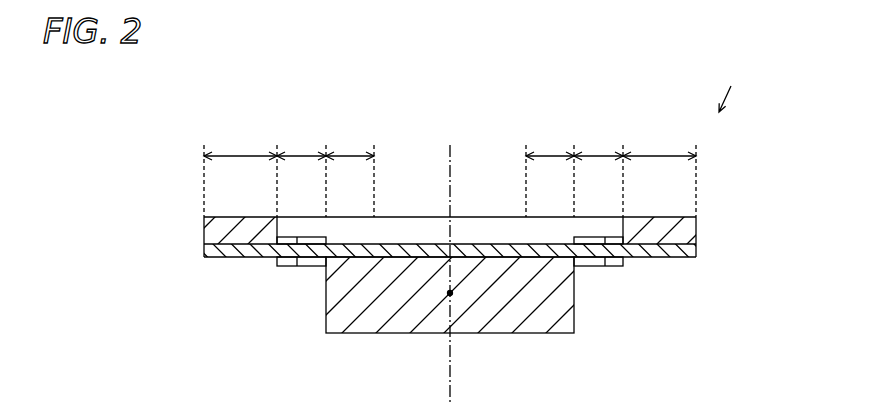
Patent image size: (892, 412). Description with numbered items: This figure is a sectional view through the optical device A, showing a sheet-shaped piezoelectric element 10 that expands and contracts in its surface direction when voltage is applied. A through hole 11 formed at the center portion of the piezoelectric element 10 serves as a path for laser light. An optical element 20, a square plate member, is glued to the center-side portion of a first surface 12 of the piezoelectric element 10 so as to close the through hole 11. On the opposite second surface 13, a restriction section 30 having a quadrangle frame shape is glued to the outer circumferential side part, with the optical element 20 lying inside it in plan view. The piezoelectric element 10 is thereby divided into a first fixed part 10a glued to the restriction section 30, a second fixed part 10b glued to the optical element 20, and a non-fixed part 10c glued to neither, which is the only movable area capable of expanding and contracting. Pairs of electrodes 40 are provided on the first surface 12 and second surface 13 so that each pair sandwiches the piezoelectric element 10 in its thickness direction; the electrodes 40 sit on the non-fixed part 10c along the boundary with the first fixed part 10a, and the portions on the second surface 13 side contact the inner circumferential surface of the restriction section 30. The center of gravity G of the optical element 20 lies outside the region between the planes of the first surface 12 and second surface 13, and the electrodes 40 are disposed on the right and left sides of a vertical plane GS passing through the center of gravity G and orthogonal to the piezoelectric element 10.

The piezoelectric element 10 is at (464, 264).
The first fixed part 10a is at (450, 172).
The second fixed part 10b is at (450, 172).
The non-fixed part 10c is at (450, 172).
The through hole 11 is at (388, 244).
The first surface 12 is at (672, 256).
The second surface 13 is at (690, 240).
The optical element 20 is at (326, 336).
The restriction section 30 is at (204, 226).
The electrodes 40 is at (292, 237).
The center of gravity G is at (452, 295).
The vertical plane GS is at (452, 392).
The optical device A is at (729, 85).